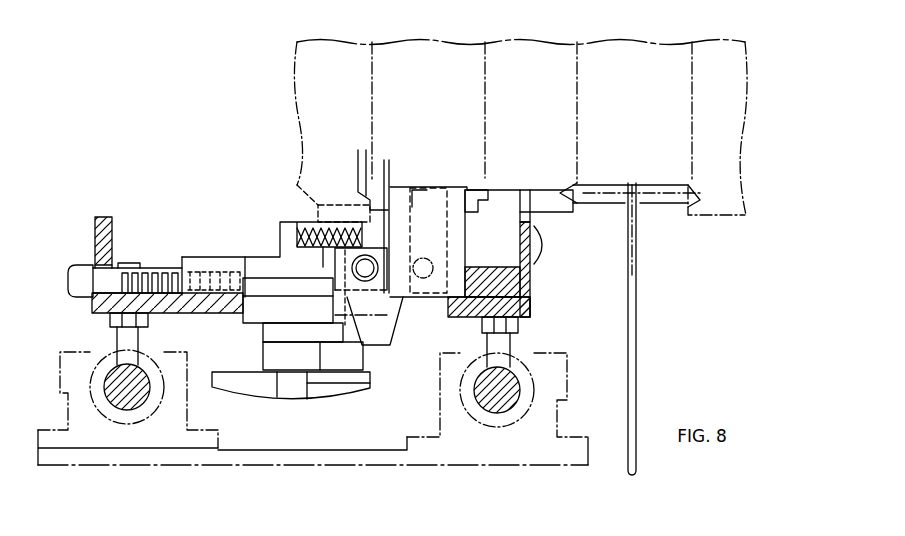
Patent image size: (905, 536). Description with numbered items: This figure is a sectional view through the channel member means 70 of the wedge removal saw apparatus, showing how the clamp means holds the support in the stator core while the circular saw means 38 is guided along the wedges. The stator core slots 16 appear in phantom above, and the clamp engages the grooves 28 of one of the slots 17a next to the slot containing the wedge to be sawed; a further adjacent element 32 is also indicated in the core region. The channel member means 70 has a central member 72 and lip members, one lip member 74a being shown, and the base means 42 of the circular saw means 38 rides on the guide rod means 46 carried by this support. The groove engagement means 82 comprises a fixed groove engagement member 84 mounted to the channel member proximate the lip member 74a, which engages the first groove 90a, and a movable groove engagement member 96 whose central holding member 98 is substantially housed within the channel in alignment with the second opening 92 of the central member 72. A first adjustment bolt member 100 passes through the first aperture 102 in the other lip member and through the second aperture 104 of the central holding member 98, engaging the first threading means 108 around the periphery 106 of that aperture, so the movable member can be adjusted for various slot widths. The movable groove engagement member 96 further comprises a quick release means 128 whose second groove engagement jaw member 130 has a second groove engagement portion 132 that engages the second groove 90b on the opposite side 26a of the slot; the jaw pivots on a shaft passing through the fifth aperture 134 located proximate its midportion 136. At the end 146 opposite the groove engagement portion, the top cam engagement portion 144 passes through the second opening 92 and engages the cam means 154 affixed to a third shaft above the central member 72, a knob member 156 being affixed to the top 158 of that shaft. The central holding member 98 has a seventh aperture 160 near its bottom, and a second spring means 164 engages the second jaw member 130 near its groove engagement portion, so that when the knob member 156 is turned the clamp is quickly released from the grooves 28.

The slots 16 is at (668, 62).
The one of the slots 17a is at (473, 144).
The opposite side of the slot 26a is at (358, 215).
The groove 28 is at (572, 190).
The guide block 32 is at (670, 196).
The circular saw means 38 is at (637, 343).
The base means 42 is at (93, 457).
The guide rod means 46 is at (512, 372).
The channel member means 70 is at (93, 298).
The central member 72 is at (118, 304).
The lip member 74a is at (535, 293).
The groove engagement means 82 is at (323, 177).
The fixed groove engagement member 84 is at (533, 230).
The first groove 90a is at (683, 188).
The second groove 90b is at (368, 183).
The second opening 92 is at (242, 313).
The movable groove engagement member 96 is at (378, 200).
The central holding member 98 is at (247, 273).
The first adjustment bolt member 100 is at (82, 263).
The first aperture 102 is at (110, 268).
The second aperture 104 is at (187, 270).
The periphery 106 is at (187, 309).
The first threading means 108 is at (205, 268).
The quick release means 128 is at (232, 384).
The second groove engagement jaw member 130 is at (390, 234).
The second groove engagement portion 132 is at (403, 195).
The fifth aperture 134 is at (387, 278).
The midportion 136 is at (385, 257).
The top cam engagement portion 144 is at (375, 336).
The end 146 is at (360, 340).
The cam means 154 is at (240, 382).
The knob member 156 is at (269, 385).
The top of the third shaft 158 is at (309, 396).
The seventh aperture 160 is at (318, 210).
The second spring means 164 is at (296, 222).